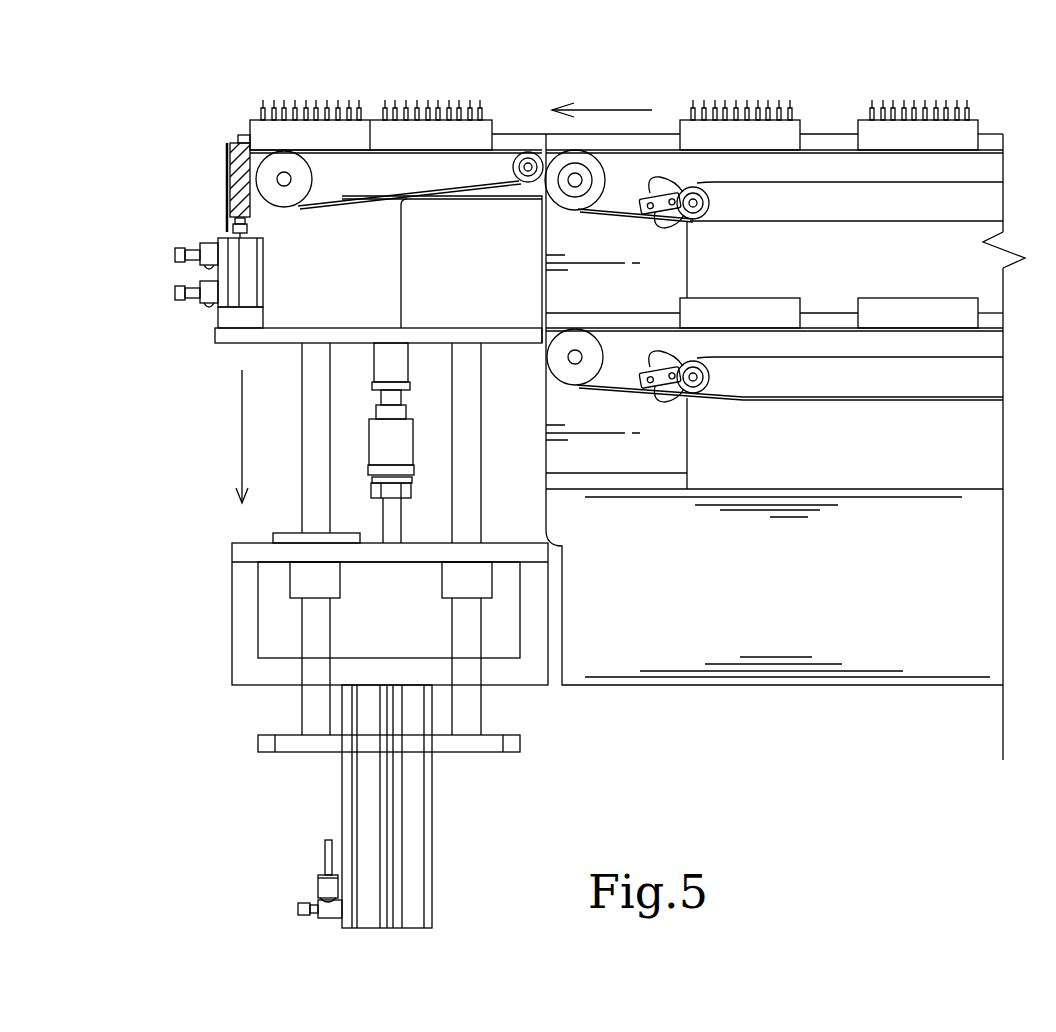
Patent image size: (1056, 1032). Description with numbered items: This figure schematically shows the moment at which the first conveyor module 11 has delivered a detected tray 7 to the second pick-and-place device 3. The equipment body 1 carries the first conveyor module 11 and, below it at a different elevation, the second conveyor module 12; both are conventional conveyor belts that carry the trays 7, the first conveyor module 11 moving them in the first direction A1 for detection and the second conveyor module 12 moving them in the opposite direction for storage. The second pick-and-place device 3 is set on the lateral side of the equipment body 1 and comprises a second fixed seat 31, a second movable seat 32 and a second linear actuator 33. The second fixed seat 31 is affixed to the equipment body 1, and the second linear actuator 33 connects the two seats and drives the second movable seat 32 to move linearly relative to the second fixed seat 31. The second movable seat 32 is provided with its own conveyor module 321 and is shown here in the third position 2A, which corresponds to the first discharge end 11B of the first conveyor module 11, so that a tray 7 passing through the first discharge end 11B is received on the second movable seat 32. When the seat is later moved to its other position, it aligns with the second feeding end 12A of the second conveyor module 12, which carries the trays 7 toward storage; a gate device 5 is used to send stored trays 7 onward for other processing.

The equipment body 1 is at (857, 692).
The third position 2A is at (205, 222).
The second pick-and-place device 3 is at (324, 211).
The gate device 5 is at (245, 183).
The tray 7 is at (328, 135).
The first conveyor module 11 is at (724, 120).
The first discharge end 11B is at (546, 150).
The second conveyor module 12 is at (774, 436).
The second feeding end 12A is at (567, 390).
The second fixed seat 31 is at (245, 602).
The second movable seat 32 is at (255, 335).
The conveyor module 321 is at (342, 203).
The second linear actuator 33 is at (350, 812).
The first direction A1 is at (610, 108).